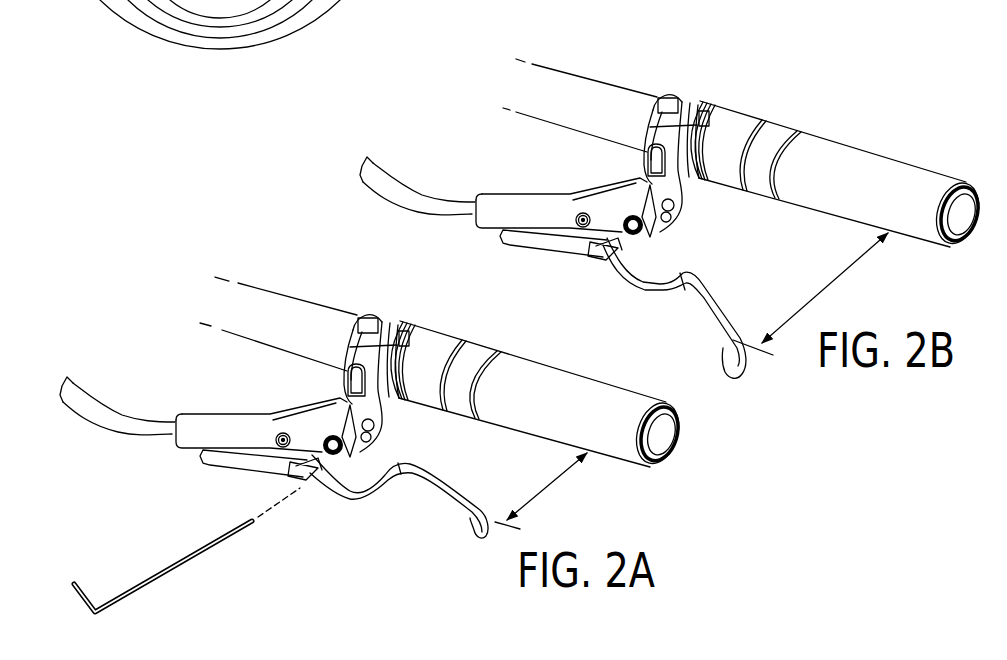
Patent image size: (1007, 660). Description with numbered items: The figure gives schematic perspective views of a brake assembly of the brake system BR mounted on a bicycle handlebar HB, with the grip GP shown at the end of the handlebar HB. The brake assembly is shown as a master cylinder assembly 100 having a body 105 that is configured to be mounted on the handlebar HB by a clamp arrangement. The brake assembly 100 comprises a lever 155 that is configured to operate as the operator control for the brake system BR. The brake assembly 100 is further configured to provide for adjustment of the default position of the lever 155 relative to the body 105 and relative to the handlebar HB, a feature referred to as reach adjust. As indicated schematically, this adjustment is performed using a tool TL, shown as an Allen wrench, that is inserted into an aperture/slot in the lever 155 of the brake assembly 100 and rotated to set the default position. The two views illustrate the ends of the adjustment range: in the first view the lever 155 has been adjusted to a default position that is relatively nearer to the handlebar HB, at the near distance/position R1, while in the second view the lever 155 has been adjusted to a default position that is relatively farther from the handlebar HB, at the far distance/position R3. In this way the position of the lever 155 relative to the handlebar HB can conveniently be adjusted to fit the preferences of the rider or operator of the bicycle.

In FIG. 2A, the handlebar HB is at (285, 302).
In FIG. 2B, the handlebar HB is at (584, 82).
In FIG. 2A, the grip GP is at (607, 438).
In FIG. 2B, the grip GP is at (908, 220).
In FIG. 2A, the brake system BR is at (274, 447).
In FIG. 2B, the brake system BR is at (553, 237).
In FIG. 2A, the body 105 is at (227, 423).
In FIG. 2B, the body 105 is at (525, 203).
In FIG. 2A, the master cylinder assembly 100 is at (298, 486).
In FIG. 2B, the master cylinder assembly 100 is at (600, 262).
In FIG. 2A, the lever 155 is at (437, 487).
In FIG. 2B, the lever 155 is at (708, 302).
In FIG. 2A, the tool TL is at (152, 578).
In FIG. 2A, the near distance/position R1 is at (541, 491).
In FIG. 2B, the far distance/position R3 is at (810, 294).